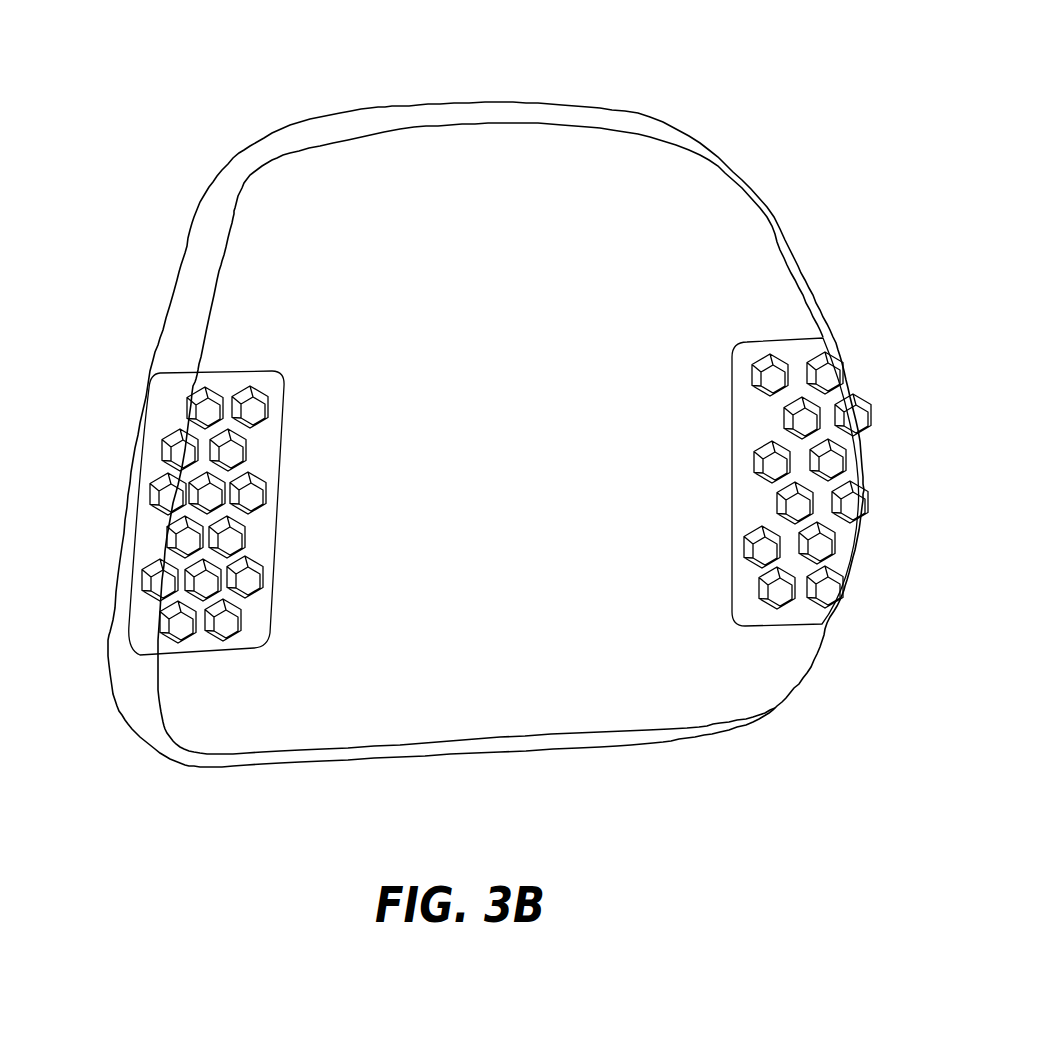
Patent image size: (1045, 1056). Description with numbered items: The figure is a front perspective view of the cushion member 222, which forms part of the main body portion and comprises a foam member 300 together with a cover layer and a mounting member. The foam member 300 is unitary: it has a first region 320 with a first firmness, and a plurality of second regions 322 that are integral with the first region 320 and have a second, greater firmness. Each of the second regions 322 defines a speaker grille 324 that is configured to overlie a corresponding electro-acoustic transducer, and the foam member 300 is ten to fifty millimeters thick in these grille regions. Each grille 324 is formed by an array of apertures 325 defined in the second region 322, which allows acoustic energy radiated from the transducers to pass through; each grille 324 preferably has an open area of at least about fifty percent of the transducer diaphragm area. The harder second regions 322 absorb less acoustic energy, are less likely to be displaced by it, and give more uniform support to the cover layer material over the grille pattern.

The cushion member 222 is at (158, 94).
The foam member 300 is at (764, 197).
The first region 320 is at (633, 213).
The second regions 322 is at (155, 467).
The speaker grille 324 is at (140, 602).
The apertures 325 is at (160, 535).